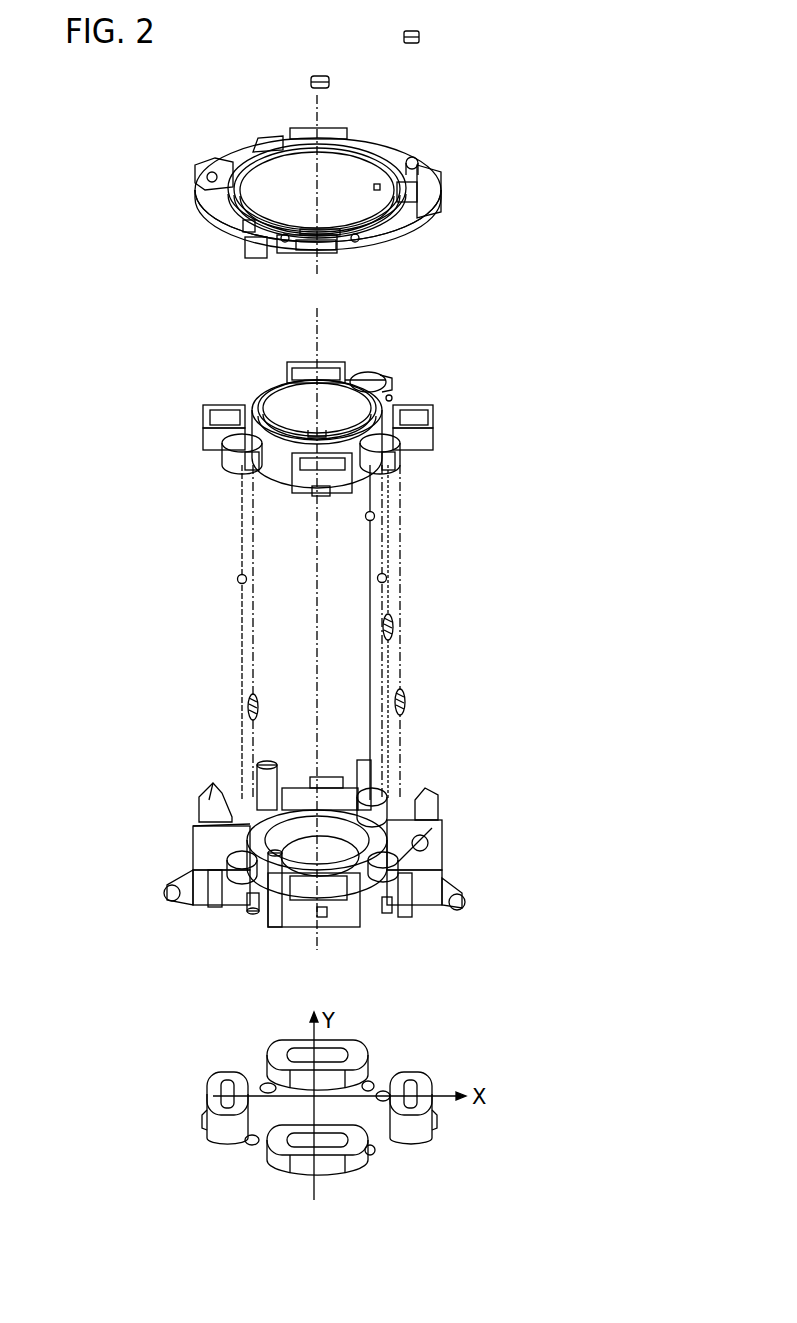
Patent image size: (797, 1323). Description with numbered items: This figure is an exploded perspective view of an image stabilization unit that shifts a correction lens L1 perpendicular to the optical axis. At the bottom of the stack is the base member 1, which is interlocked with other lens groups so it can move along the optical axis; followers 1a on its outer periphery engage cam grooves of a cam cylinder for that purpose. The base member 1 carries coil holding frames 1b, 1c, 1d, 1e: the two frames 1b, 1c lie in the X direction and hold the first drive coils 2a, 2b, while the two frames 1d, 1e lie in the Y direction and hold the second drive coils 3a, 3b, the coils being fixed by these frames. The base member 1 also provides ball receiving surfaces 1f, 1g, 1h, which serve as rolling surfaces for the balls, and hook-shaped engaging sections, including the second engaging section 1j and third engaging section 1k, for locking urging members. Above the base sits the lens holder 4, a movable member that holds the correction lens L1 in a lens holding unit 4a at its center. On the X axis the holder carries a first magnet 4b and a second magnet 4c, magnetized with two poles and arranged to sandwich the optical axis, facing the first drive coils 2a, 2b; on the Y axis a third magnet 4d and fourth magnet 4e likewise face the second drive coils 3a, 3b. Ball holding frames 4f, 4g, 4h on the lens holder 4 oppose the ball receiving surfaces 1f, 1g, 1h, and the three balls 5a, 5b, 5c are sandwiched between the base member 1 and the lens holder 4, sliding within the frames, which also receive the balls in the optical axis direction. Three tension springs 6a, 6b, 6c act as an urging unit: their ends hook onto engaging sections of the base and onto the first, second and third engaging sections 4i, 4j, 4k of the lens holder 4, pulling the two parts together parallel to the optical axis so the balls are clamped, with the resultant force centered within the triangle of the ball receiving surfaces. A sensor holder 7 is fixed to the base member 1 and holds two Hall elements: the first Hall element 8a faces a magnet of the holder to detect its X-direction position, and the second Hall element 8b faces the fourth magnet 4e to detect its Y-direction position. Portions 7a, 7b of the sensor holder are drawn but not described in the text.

The base member 1 is at (314, 852).
The followers 1a is at (165, 898).
The coil holding frame 1b is at (443, 830).
The coil holding frame 1c is at (195, 828).
The coil holding frame 1d is at (303, 790).
The coil holding frame 1e is at (318, 927).
The ball receiving surface 1f is at (382, 800).
The ball receiving surface 1g is at (228, 862).
The ball receiving surface 1h is at (443, 865).
The second engaging section 1j is at (255, 914).
The third engaging section 1k is at (386, 915).
The first drive coil 2a is at (430, 1130).
The first drive coil 2b is at (208, 1097).
The second drive coil 3a is at (285, 1040).
The second drive coil 3b is at (340, 1175).
The lens holder 4 is at (311, 427).
The lens holding unit 4a is at (386, 382).
The first magnet 4b is at (433, 418).
The second magnet 4c is at (203, 415).
The third magnet 4d is at (302, 363).
The fourth magnet 4e is at (312, 495).
The ball holding frame 4f is at (367, 372).
The ball holding frame 4g is at (222, 443).
The ball holding frame 4h is at (400, 446).
The first engaging section 4i is at (393, 397).
The second engaging section 4j is at (396, 465).
The third engaging section 4k is at (246, 462).
The ball 5a is at (375, 517).
The ball 5b is at (237, 579).
The ball 5c is at (387, 578).
The tension spring 6a is at (394, 628).
The tension spring 6b is at (248, 707).
The tension spring 6c is at (406, 702).
The sensor holder 7 is at (317, 214).
The cover engaging portion 7a is at (441, 193).
The cover engaging portion 7b is at (330, 252).
The first Hall element 8a is at (421, 38).
The second Hall element 8b is at (310, 83).
The correction lens L1 is at (292, 396).